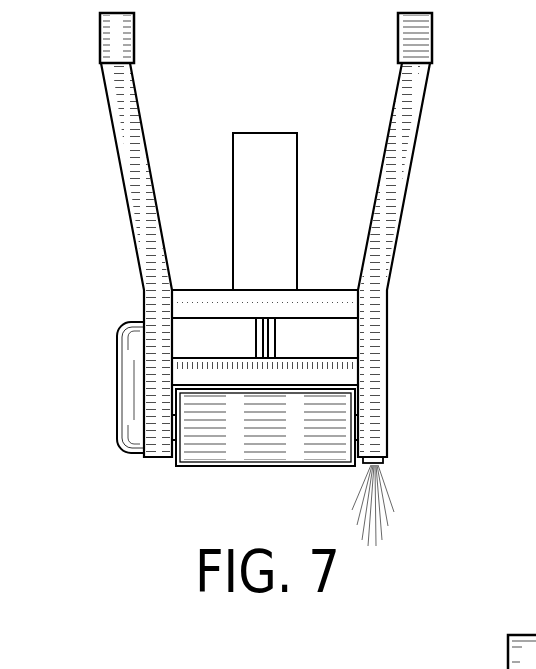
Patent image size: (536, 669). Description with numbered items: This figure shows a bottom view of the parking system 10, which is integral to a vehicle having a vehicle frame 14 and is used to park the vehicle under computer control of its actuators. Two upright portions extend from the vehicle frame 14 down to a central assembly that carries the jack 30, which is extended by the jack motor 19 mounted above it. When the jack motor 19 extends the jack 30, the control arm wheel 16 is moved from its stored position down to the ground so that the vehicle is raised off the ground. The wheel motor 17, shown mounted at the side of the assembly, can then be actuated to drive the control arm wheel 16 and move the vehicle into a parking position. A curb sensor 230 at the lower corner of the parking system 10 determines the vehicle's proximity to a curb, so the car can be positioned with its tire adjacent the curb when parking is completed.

The parking system 10 is at (387, 383).
The vehicle frame 14 is at (120, 35).
The control arm wheel 16 is at (195, 459).
The wheel motor 17 is at (117, 382).
The jack motor 19 is at (284, 222).
The jack 30 is at (276, 336).
The curb sensor 230 is at (384, 460).